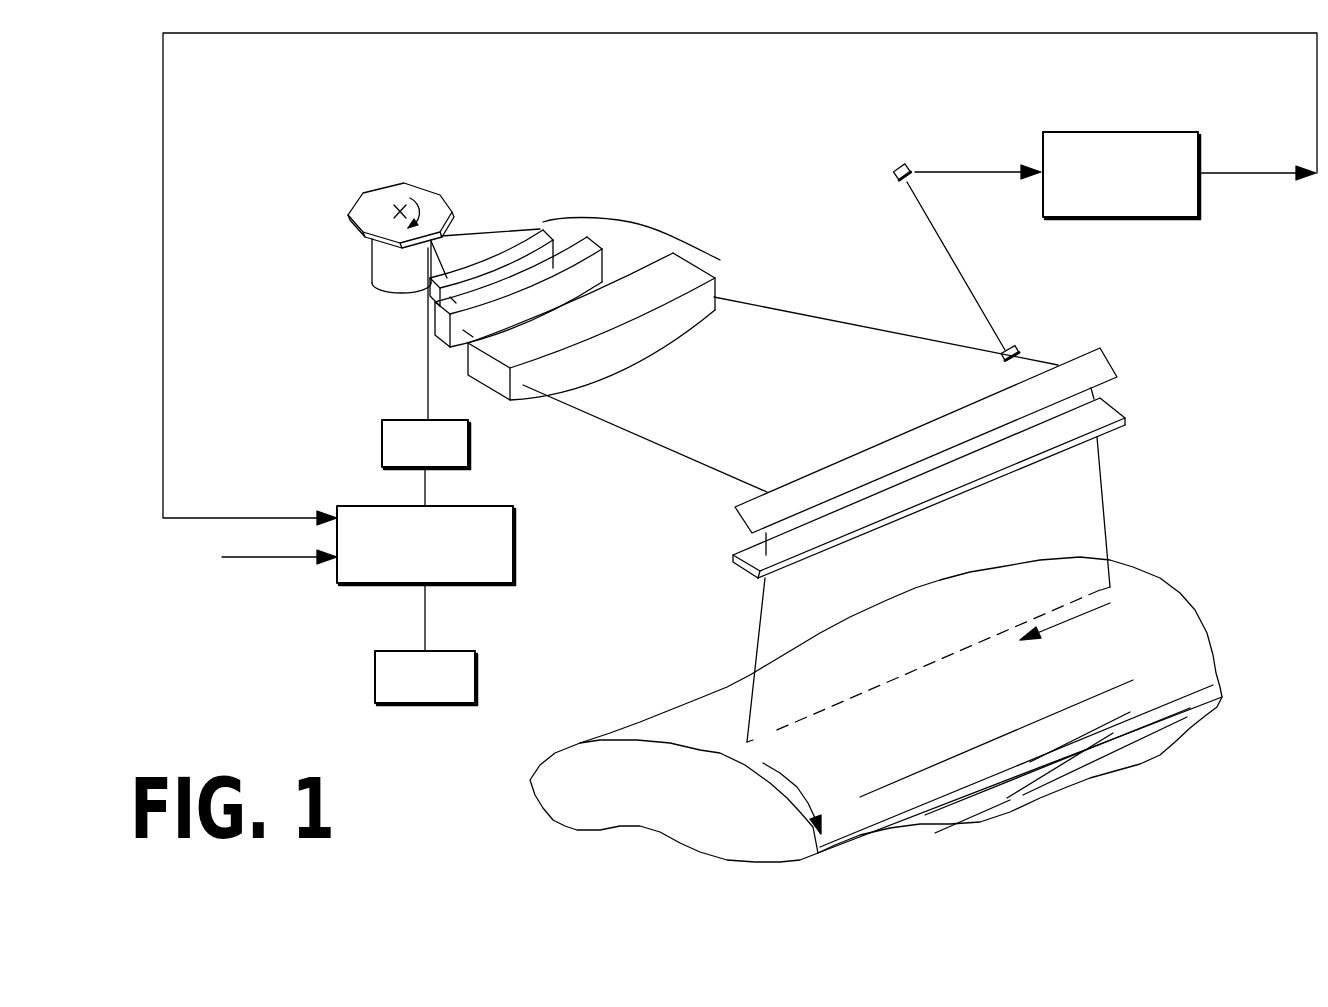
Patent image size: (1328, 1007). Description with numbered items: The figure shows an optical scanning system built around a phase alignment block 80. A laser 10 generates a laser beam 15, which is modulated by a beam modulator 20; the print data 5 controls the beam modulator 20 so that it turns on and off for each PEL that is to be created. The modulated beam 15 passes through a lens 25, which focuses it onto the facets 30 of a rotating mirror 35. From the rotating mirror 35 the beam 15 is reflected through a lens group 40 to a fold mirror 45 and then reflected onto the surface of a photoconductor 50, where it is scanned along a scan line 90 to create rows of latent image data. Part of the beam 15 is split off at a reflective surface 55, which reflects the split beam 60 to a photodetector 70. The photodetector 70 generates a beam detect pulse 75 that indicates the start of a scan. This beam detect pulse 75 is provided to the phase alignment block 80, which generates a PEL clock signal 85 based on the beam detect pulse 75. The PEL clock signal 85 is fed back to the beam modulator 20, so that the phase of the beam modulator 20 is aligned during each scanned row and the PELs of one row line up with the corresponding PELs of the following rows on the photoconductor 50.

The print data 5 is at (271, 560).
The laser 10 is at (470, 672).
The laser beam 15 is at (427, 625).
The beam modulator 20 is at (507, 528).
The lens 25 is at (380, 448).
The facets 30 is at (457, 222).
The rotating mirror 35 is at (402, 190).
The lens group 40 is at (634, 221).
The fold mirror 45 is at (1113, 358).
The photoconductor 50 is at (1053, 787).
The reflective surface 55 is at (1018, 348).
The split beam 60 is at (963, 273).
The photodetector 70 is at (895, 162).
The beam detect pulse (BDP) 75 is at (987, 170).
The phase alignment block 80 is at (1175, 132).
The PEL clock signal 85 is at (1283, 172).
The scan line 90 is at (953, 652).